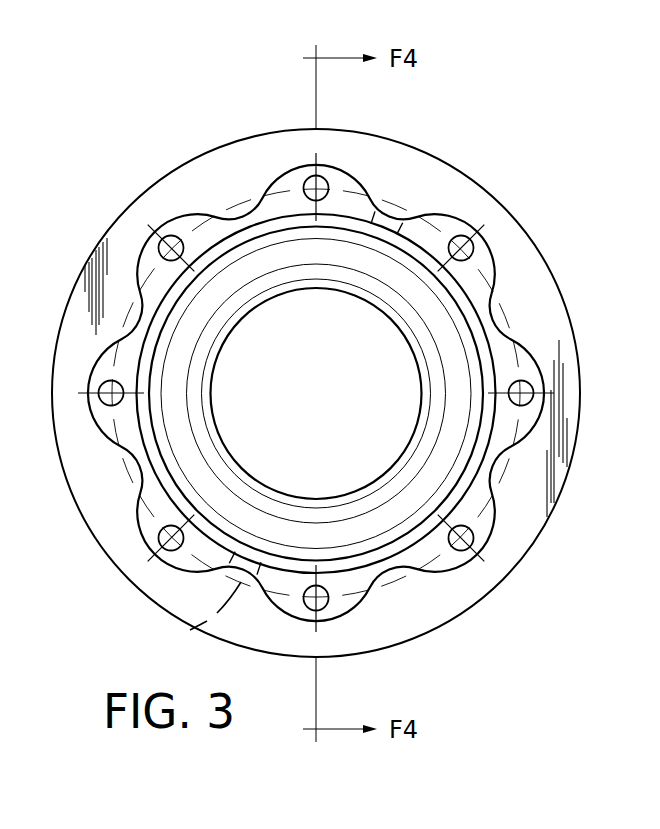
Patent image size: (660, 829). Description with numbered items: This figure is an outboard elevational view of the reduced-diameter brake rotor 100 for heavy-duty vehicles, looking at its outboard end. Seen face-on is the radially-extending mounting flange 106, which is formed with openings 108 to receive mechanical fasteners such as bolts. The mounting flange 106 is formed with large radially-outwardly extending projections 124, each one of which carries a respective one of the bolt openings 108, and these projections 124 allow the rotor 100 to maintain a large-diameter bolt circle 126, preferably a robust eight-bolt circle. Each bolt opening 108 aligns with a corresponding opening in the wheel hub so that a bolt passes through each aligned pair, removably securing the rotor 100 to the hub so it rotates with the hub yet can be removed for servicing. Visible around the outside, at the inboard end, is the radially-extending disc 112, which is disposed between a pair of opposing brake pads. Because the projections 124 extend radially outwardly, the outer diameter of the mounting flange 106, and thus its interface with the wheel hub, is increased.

The reduced-diameter brake rotor 100 is at (453, 82).
The disc 112 is at (211, 152).
The mounting flange 106 is at (482, 257).
The openings 108 is at (474, 545).
The projections 124 is at (147, 523).
The bolt circle 126 is at (179, 633).